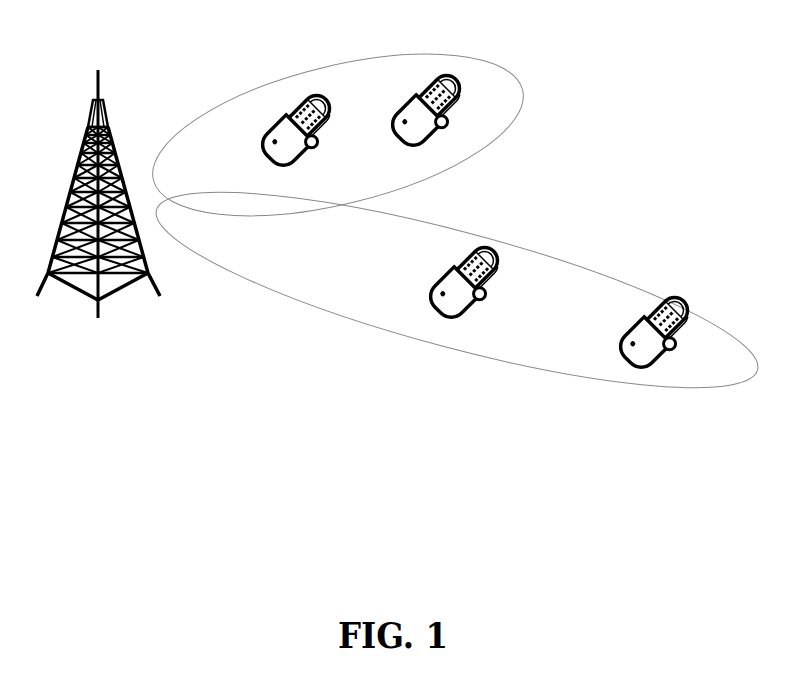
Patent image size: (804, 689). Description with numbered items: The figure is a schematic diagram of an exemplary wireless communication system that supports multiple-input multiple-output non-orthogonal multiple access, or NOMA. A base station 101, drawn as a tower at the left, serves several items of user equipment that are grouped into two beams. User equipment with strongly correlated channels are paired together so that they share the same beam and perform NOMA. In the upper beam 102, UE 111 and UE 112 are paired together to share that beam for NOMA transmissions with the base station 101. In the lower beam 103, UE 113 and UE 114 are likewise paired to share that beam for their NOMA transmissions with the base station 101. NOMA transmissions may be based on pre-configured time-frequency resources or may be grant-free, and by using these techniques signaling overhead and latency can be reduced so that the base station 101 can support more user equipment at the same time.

The base station 101 is at (98, 218).
The beam 102 is at (533, 110).
The beam 103 is at (304, 314).
The UE 111 is at (300, 99).
The UE 112 is at (430, 80).
The UE 113 is at (468, 266).
The UE 114 is at (658, 320).